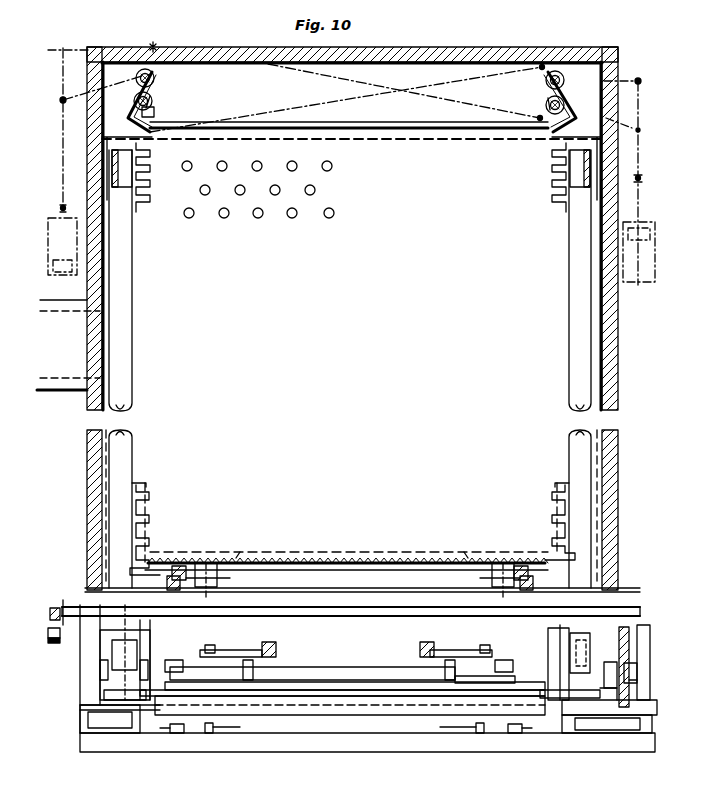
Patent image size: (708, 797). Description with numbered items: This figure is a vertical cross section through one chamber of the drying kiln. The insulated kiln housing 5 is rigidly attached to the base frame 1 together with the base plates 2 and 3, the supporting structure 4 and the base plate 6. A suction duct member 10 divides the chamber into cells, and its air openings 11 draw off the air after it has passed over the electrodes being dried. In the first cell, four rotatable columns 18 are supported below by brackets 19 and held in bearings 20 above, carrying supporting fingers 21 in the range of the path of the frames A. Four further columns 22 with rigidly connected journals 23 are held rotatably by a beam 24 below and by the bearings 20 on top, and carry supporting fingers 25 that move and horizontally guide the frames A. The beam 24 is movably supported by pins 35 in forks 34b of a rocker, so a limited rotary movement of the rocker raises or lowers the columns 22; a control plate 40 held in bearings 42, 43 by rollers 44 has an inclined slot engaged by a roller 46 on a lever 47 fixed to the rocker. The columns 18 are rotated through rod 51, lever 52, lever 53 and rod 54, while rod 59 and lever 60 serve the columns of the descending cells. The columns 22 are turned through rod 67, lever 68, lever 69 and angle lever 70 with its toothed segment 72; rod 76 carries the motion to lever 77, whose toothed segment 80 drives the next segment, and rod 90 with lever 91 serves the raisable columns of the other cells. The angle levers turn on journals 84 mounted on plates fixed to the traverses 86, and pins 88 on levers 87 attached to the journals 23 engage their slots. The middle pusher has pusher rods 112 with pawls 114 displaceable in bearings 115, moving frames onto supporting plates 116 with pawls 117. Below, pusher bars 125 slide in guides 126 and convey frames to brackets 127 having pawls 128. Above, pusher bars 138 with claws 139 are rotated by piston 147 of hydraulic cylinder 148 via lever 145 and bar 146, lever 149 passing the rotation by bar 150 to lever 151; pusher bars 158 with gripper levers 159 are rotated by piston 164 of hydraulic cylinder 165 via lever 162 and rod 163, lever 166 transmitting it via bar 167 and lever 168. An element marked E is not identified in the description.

The base 1 is at (660, 723).
The base plate 2 is at (85, 707).
The base plate 3 is at (650, 708).
The supporting structure 4 is at (612, 592).
The insulated kiln housing 5 is at (618, 342).
The base plate 6 is at (292, 587).
The suction duct member 10 is at (335, 279).
The air openings 11 is at (334, 212).
The rotatable columns 18 is at (141, 485).
The brackets 19 is at (141, 634).
The bearings 20 is at (112, 157).
The supporting fingers 21 is at (150, 493).
The columns 22 is at (128, 342).
The journals 23 is at (140, 648).
The beam 24 is at (104, 690).
The supporting fingers 25 is at (142, 214).
The forks 34b is at (100, 666).
The pins 35 is at (115, 678).
The control plate 40 is at (650, 652).
The bearing 42 is at (650, 668).
The bearing 43 is at (609, 722).
The rollers 44 is at (633, 650).
The roller 46 is at (632, 680).
The lever 47 is at (608, 671).
The rod 51 is at (52, 608).
The lever 52 is at (63, 600).
The lever 53 is at (150, 612).
The rod 54 is at (340, 616).
The rod 59 is at (48, 640).
The lever 60 is at (48, 631).
The rod 67 is at (272, 648).
The lever 68 is at (230, 650).
The lever 69 is at (255, 666).
The angle lever 70 is at (503, 660).
The toothed segment 72 is at (228, 690).
The rod 76 is at (326, 674).
The lever 77 is at (447, 666).
The toothed segment 80 is at (475, 682).
The journals 84 is at (210, 645).
The traverses 86 is at (398, 691).
The levers 87 is at (525, 696).
The pin 88 is at (185, 693).
The rod 90 is at (424, 648).
The lever 91 is at (446, 650).
The pusher rods 112 is at (178, 565).
The pawls 114 is at (186, 580).
The bearings 115 is at (520, 582).
The supporting plates 116 is at (217, 577).
The pawl 117 is at (237, 557).
The pusher bars 125 is at (180, 734).
The guides 126 is at (165, 734).
The brackets 127 is at (210, 734).
The pawl 128 is at (236, 734).
The pusher bars 138 is at (141, 70).
The claws 139 is at (134, 103).
The lever 145 is at (63, 100).
The bar 146 is at (63, 150).
The piston 147 is at (60, 266).
The hydraulic cylinder 148 is at (58, 218).
The lever 149 is at (150, 48).
The bar 150 is at (373, 90).
The lever 151 is at (540, 119).
The pusher bars 158 is at (150, 98).
The gripper levers 159 is at (143, 112).
The lever 162 is at (625, 86).
The rod 163 is at (639, 132).
The piston 164 is at (641, 231).
The hydraulic cylinder 165 is at (642, 282).
The lever 166 is at (542, 68).
The bar 167 is at (278, 95).
The lever 168 is at (154, 112).
The frames A is at (384, 128).
The band E is at (196, 558).